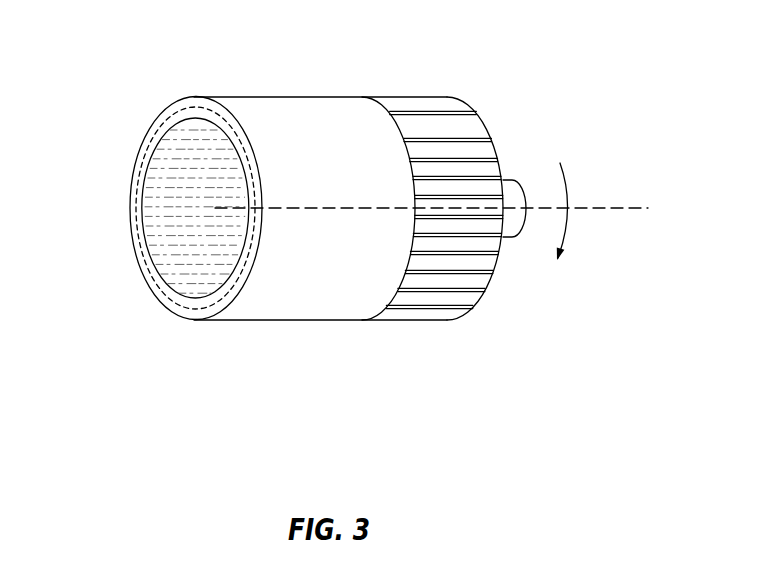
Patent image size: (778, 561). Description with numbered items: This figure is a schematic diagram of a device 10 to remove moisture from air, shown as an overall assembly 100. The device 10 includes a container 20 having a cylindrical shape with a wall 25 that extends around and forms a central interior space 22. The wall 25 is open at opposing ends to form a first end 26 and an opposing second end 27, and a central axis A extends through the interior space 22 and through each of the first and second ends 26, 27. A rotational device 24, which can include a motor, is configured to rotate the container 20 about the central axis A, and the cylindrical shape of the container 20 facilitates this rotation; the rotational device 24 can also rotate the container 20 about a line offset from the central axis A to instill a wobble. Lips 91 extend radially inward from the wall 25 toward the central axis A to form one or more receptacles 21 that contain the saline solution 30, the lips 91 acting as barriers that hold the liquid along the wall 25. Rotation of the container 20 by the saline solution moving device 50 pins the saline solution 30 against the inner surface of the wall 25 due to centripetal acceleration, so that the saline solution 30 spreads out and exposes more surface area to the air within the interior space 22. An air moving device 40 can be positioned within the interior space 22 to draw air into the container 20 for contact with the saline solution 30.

The lighting device assembly 100 is at (90, 73).
The device 10 is at (200, 386).
The container 20 is at (258, 130).
The receptacles 21 is at (170, 302).
The central interior space 22 is at (186, 254).
The rotational device 24 is at (511, 193).
The wall 25 is at (297, 98).
The first end 26 is at (142, 160).
The second end 27 is at (400, 285).
The saline solution 30 is at (222, 252).
The air moving device 40 is at (452, 287).
The saline solution moving device 50 is at (527, 228).
The lips 91 is at (183, 313).
The central axis A is at (620, 208).